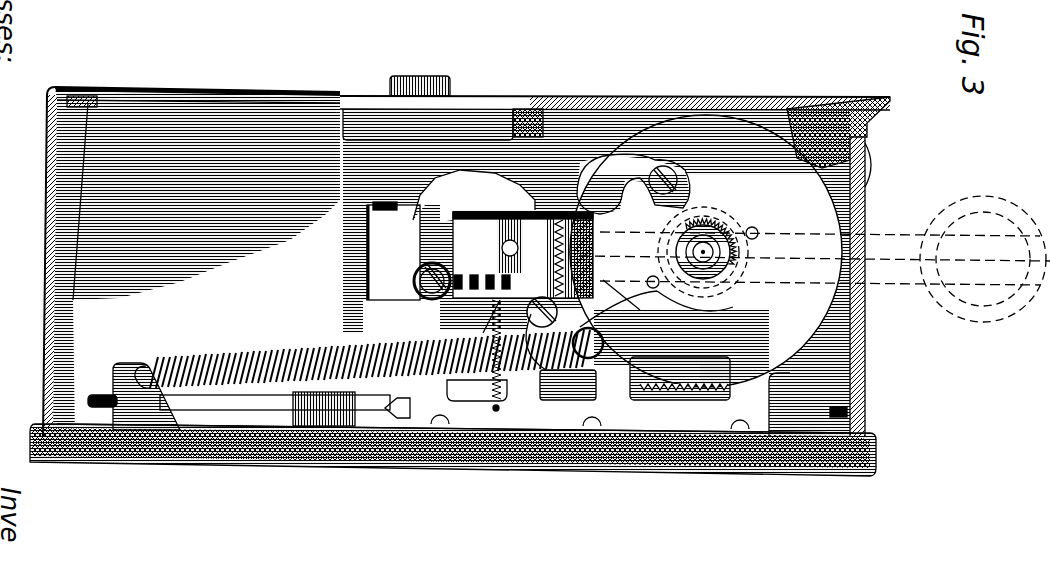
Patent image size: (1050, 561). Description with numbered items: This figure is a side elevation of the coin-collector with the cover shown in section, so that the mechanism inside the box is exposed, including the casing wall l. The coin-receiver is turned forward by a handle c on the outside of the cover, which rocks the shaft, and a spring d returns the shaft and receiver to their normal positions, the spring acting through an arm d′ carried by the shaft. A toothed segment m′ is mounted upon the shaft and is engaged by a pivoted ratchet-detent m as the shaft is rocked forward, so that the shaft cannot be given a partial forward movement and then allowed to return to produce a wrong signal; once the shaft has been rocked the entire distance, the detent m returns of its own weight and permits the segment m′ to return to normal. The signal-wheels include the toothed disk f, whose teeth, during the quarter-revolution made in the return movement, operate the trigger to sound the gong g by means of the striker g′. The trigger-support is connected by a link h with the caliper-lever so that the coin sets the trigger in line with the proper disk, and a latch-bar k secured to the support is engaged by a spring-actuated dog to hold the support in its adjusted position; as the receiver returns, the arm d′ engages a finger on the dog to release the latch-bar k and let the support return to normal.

The casing block l is at (196, 268).
The latch-bar k is at (843, 76).
The ratchet-detent m is at (633, 184).
The toothed segment m′ is at (746, 215).
The arm d′ is at (623, 283).
The link h is at (470, 264).
The toothed disk f is at (666, 375).
The spring d is at (218, 387).
The spiral steel gong g is at (273, 403).
The striker g′ is at (397, 417).
The handle c is at (884, 231).